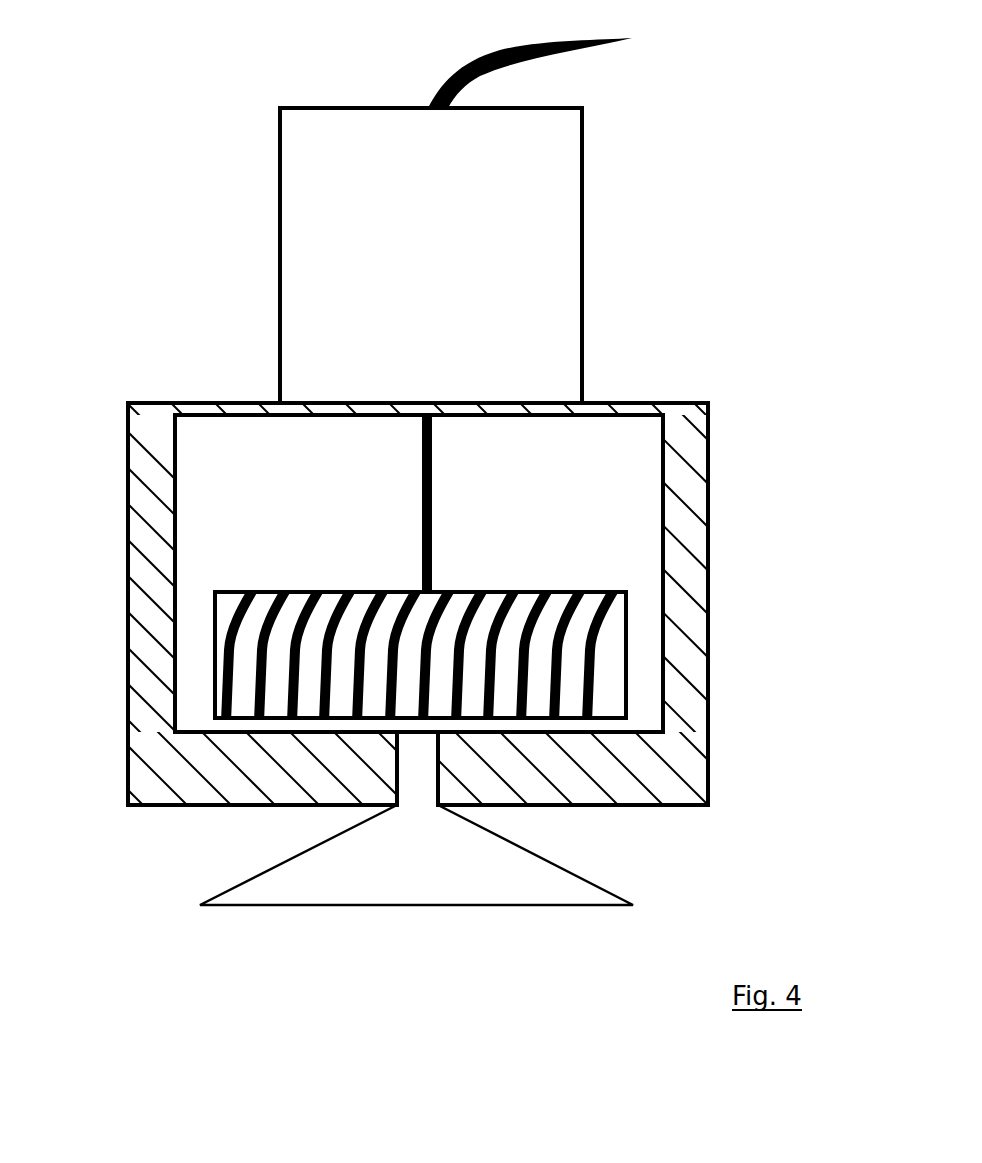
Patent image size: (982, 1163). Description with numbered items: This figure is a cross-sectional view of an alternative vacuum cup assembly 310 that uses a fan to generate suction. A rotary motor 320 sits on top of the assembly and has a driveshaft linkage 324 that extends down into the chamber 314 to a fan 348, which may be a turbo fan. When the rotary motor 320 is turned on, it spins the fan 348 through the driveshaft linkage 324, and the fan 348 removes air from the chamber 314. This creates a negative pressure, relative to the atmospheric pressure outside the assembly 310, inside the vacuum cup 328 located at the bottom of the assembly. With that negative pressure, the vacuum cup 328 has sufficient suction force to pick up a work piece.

The cup assembly 310 is at (770, 404).
The chamber 314 is at (618, 504).
The rotary motor 320 is at (448, 254).
The driveshaft linkage 324 is at (422, 533).
The vacuum cup 328 is at (223, 888).
The fan 348 is at (215, 662).